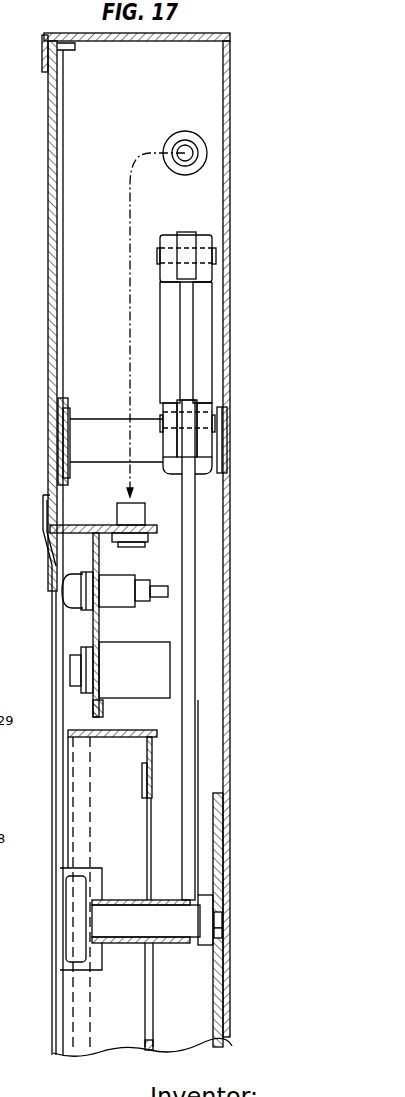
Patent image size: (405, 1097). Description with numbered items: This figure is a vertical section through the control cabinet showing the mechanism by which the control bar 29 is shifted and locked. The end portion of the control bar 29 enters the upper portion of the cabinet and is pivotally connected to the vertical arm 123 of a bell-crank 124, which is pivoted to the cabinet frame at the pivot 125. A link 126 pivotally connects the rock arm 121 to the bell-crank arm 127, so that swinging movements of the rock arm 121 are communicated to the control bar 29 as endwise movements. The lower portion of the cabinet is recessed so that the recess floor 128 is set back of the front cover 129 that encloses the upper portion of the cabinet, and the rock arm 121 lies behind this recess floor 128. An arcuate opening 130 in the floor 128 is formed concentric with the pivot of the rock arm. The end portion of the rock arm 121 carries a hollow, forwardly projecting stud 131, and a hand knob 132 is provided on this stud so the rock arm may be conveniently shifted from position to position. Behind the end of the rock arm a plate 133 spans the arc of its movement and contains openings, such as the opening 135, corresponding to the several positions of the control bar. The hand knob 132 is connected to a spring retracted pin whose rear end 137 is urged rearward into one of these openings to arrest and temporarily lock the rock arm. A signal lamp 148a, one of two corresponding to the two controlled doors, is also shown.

The control bar 29 is at (185, 238).
The rock arm 121 is at (204, 942).
The vertical arm 123 is at (202, 335).
The bell-crank 124 is at (217, 386).
The pivot 125 is at (113, 438).
The link 126 is at (190, 705).
The bell-crank arm 127 is at (203, 445).
The recess floor 128 is at (145, 795).
The front cover 129 is at (50, 356).
The arcuate opening 130 is at (148, 866).
The stud 131 is at (129, 930).
The hand knob 132 is at (73, 947).
The plate 133 is at (222, 958).
The opening 135 is at (216, 932).
The rear end of spring retracted pin 137 is at (217, 918).
The signal lamp 148a is at (63, 591).